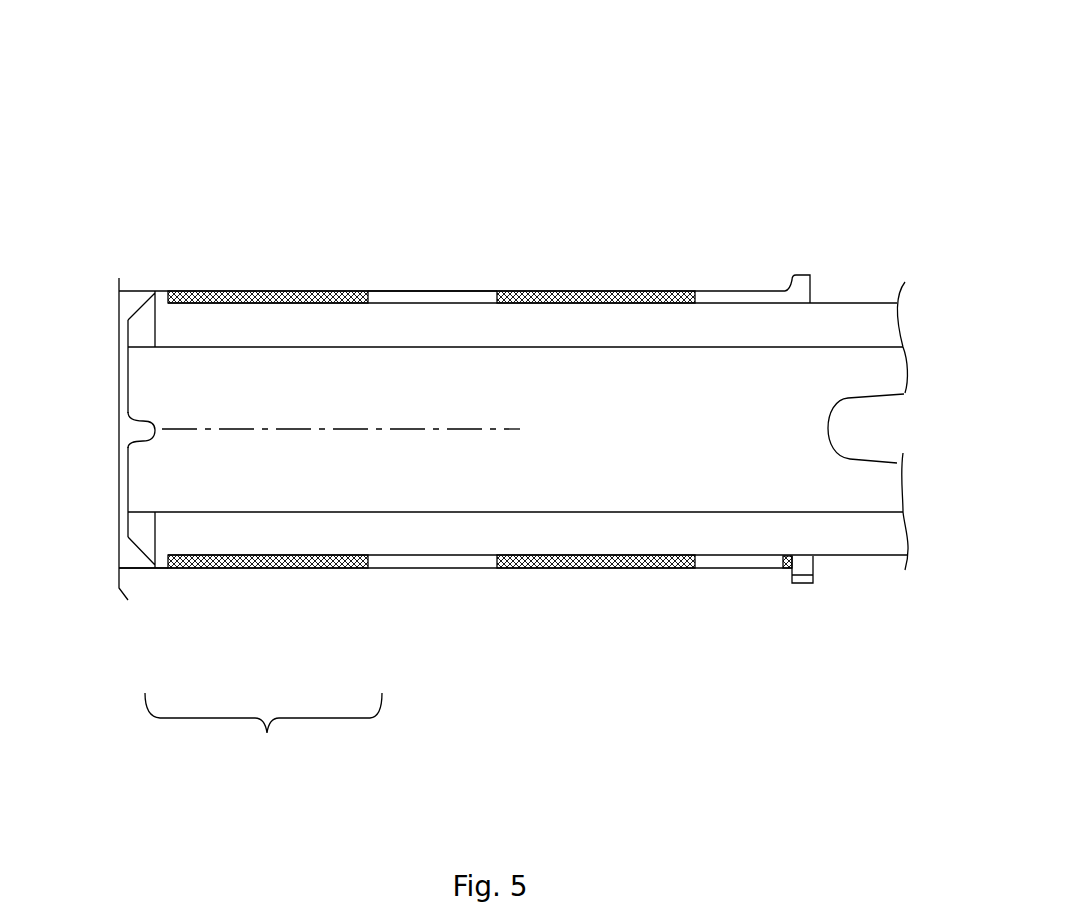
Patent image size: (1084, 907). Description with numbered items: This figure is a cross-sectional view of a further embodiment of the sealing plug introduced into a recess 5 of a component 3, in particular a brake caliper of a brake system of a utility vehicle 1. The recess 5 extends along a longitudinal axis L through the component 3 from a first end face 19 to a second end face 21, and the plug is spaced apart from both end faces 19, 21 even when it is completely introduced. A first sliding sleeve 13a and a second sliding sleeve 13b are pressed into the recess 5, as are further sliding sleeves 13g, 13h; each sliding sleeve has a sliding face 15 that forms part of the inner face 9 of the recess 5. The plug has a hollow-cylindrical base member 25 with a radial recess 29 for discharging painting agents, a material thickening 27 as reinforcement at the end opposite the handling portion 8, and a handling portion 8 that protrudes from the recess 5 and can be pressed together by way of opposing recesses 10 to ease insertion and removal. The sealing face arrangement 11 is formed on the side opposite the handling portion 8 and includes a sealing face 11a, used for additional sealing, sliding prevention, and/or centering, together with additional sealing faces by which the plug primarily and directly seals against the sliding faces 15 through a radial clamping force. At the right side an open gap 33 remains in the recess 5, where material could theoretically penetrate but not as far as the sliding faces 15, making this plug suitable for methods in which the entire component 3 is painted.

The utility vehicle 1 is at (288, 107).
The component 3 is at (448, 247).
The recess 5 is at (108, 390).
The handling portion 8 is at (905, 328).
The inner face 9 is at (410, 287).
The recess 10 is at (867, 427).
The sealing face arrangement 11 is at (263, 732).
The sealing face 11a is at (158, 570).
The first sliding sleeve 13a is at (248, 290).
The second sliding sleeve 13b is at (623, 290).
The sliding sleeve 13g is at (297, 565).
The sliding sleeve 13h is at (517, 572).
The sliding face 15 is at (315, 312).
The first end face 19 is at (825, 584).
The second end face 21 is at (103, 562).
The hollow-cylindrical base member 25 is at (200, 525).
The material thickening 27 is at (172, 330).
The radial recess 29 is at (142, 429).
The open gap 33 is at (823, 283).
The longitudinal axis L is at (447, 428).